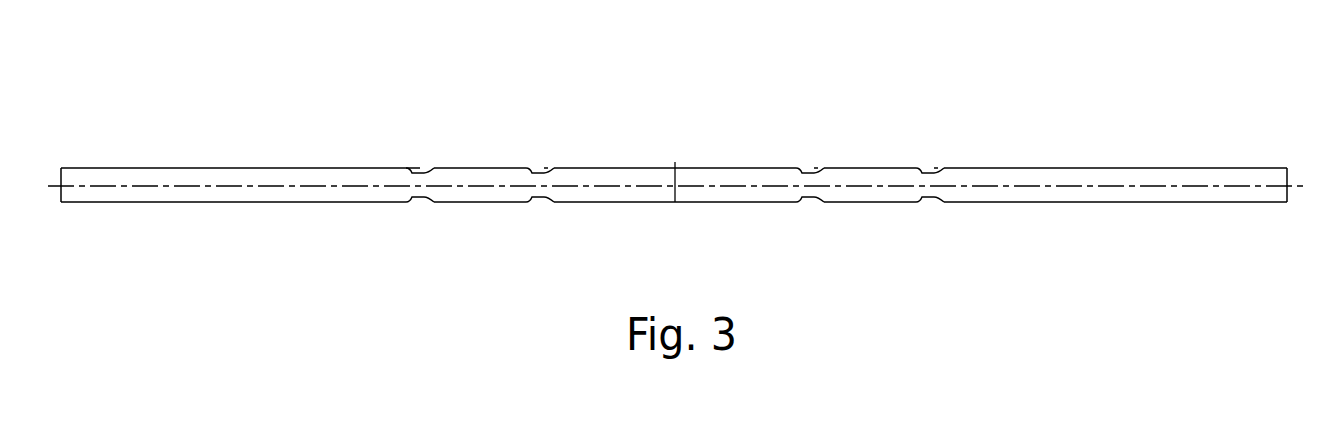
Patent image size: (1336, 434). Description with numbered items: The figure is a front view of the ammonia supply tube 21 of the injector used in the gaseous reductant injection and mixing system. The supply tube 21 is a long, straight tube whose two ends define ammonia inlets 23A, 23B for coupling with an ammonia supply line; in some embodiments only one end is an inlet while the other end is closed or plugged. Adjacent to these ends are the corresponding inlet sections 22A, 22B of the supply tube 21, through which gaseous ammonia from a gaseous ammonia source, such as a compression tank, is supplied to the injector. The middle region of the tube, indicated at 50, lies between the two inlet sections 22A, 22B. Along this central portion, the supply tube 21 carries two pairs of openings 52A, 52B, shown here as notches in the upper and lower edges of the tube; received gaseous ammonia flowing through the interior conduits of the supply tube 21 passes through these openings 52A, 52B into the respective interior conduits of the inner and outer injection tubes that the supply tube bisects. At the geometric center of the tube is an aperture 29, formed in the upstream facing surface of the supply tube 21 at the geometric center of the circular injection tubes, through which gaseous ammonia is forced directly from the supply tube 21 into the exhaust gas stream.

The ammonia supply tube 21 is at (999, 158).
The inlet section 22A is at (205, 168).
The inlet section 22B is at (1060, 177).
The ammonia inlet 23A is at (60, 177).
The ammonia inlet 23B is at (1287, 176).
The aperture 29 is at (675, 186).
The central portion 50 is at (610, 172).
The opening 52A is at (411, 172).
The opening 52B is at (532, 172).